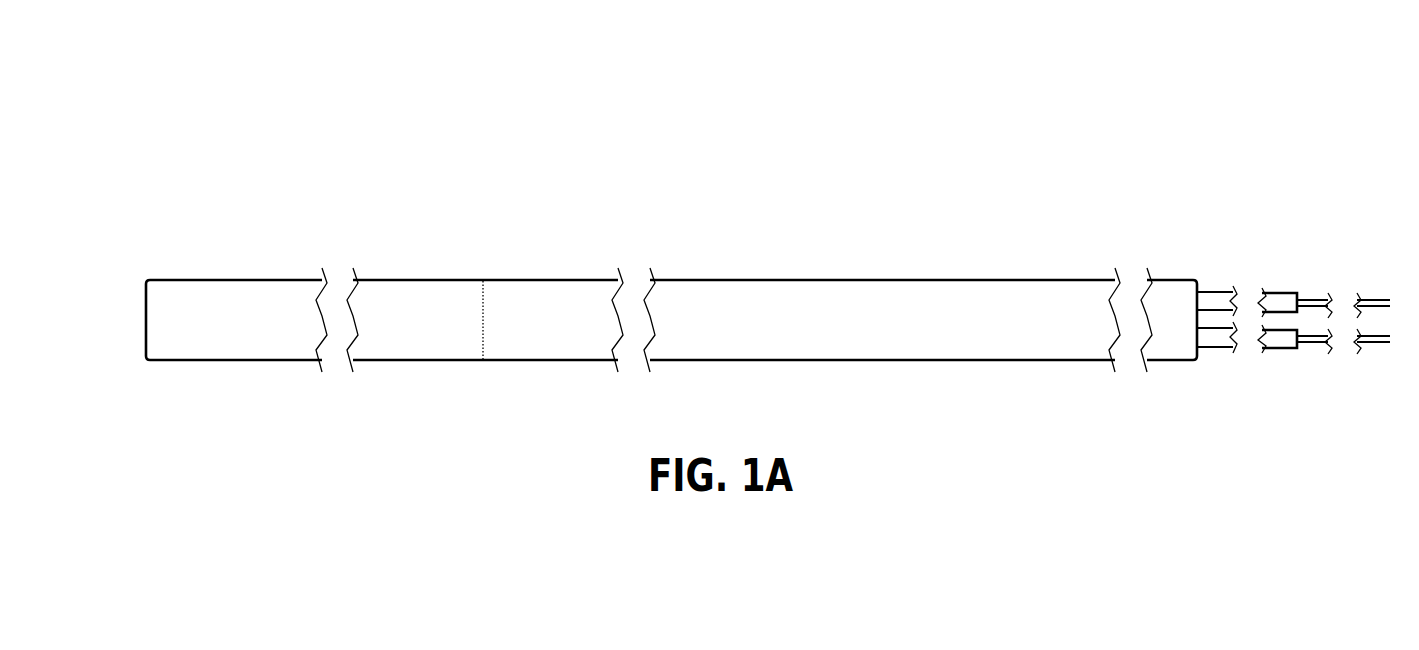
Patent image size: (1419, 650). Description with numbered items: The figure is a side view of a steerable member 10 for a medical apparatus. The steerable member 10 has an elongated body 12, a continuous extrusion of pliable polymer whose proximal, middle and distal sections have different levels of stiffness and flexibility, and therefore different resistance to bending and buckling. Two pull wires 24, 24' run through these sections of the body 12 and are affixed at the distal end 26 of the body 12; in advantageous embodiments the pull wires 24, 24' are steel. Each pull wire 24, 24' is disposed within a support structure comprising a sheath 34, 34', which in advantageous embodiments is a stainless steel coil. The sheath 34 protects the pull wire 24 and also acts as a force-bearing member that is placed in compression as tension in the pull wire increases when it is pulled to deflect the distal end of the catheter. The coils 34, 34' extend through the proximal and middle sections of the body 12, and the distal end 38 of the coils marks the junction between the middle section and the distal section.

The steerable member 10 is at (986, 150).
The elongated body 12 is at (836, 277).
The pull wire 24 is at (1364, 251).
The pull wire 24' is at (1361, 391).
The distal end 26 is at (200, 277).
The sheath 34 is at (1287, 251).
The sheath 34' is at (1282, 389).
The distal end of the coils 38 is at (486, 298).